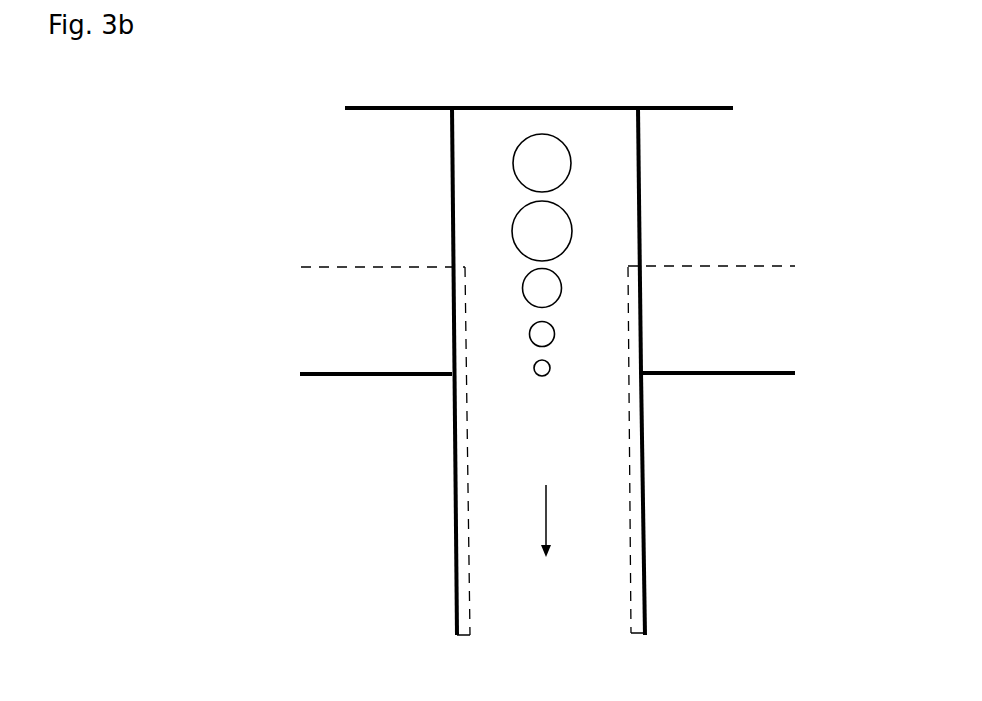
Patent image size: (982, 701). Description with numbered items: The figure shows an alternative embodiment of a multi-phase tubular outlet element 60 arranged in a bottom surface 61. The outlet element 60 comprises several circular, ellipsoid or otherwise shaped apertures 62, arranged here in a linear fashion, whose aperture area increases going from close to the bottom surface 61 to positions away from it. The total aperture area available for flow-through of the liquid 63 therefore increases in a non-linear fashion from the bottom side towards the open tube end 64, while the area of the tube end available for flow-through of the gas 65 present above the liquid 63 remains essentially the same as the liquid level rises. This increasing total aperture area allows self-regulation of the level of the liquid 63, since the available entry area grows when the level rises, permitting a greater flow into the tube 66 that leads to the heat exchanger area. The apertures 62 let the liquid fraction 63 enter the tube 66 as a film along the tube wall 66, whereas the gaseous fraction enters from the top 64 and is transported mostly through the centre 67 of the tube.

The tubular outlet element 60 is at (418, 100).
The bottom surface 61 is at (305, 374).
The apertures 62 is at (532, 133).
The liquid 63 is at (333, 262).
The open tube end 64 is at (677, 106).
The gas 65 is at (723, 207).
The tube 66 is at (452, 527).
The centre of the tube 67 is at (565, 562).